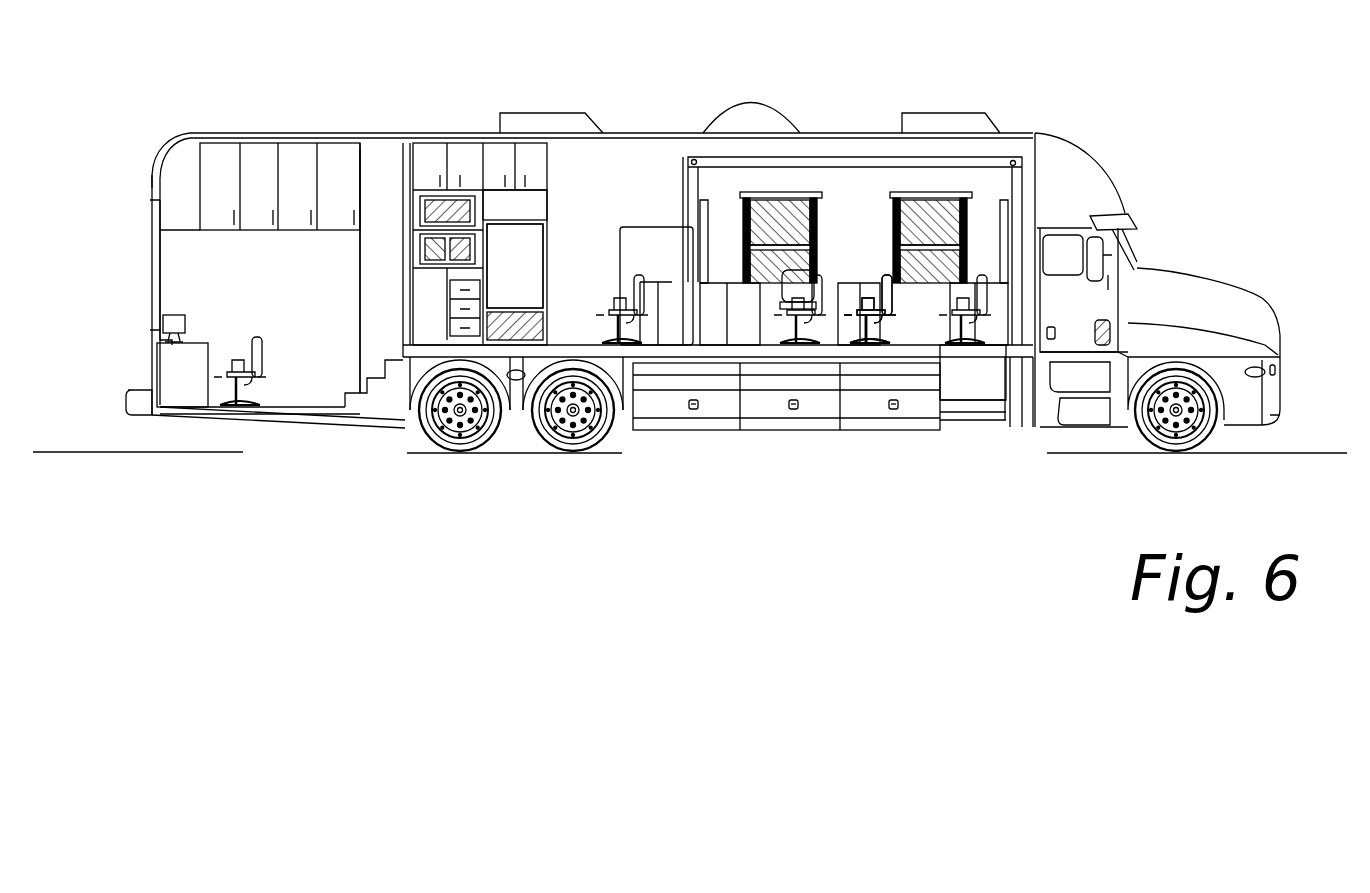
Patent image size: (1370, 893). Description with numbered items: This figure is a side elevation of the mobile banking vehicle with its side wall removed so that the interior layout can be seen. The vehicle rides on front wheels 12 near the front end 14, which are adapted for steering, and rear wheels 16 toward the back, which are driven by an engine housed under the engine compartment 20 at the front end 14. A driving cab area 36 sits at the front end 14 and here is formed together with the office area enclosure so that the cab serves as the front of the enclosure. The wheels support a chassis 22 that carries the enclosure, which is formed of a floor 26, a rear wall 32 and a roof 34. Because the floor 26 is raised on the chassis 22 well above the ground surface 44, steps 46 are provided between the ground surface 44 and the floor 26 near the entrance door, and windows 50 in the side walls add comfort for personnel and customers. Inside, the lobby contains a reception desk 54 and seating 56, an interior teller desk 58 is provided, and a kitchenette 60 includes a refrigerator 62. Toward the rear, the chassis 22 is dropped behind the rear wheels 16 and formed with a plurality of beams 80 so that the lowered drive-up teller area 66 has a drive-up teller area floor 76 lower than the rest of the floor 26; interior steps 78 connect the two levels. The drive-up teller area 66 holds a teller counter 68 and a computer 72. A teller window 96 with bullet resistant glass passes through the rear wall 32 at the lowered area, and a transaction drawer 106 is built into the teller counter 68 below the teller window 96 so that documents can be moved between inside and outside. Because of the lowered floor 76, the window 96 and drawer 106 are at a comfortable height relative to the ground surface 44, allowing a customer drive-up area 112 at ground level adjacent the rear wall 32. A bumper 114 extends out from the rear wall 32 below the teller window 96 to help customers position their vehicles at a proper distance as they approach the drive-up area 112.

The front wheels 12 is at (1200, 435).
The front end 14 is at (1285, 325).
The rear wheels 16 is at (568, 443).
The engine compartment 20 is at (1218, 278).
The chassis 22 is at (693, 352).
The floor 26 is at (572, 340).
The rear wall 32 is at (152, 165).
The roof 34 is at (636, 130).
The driving cab area 36 is at (1130, 262).
The ground surface 44 is at (1316, 445).
The steps 46 is at (968, 420).
The windows 50 is at (920, 210).
The reception desk 54 is at (868, 283).
The seating 56 is at (803, 282).
The interior teller desk 58 is at (651, 280).
The kitchenette 60 is at (473, 158).
The refrigerator 62 is at (505, 245).
The lowered drive-up teller area 66 is at (322, 250).
The teller counter 68 is at (200, 340).
The computer 72 is at (162, 322).
The drive-up teller area floor 76 is at (290, 403).
The interior steps 78 is at (373, 392).
The beams 80 is at (266, 428).
The teller window 96 is at (155, 253).
The transaction drawer 106 is at (148, 364).
The drive-up area 112 is at (80, 450).
The bumper 114 is at (143, 408).